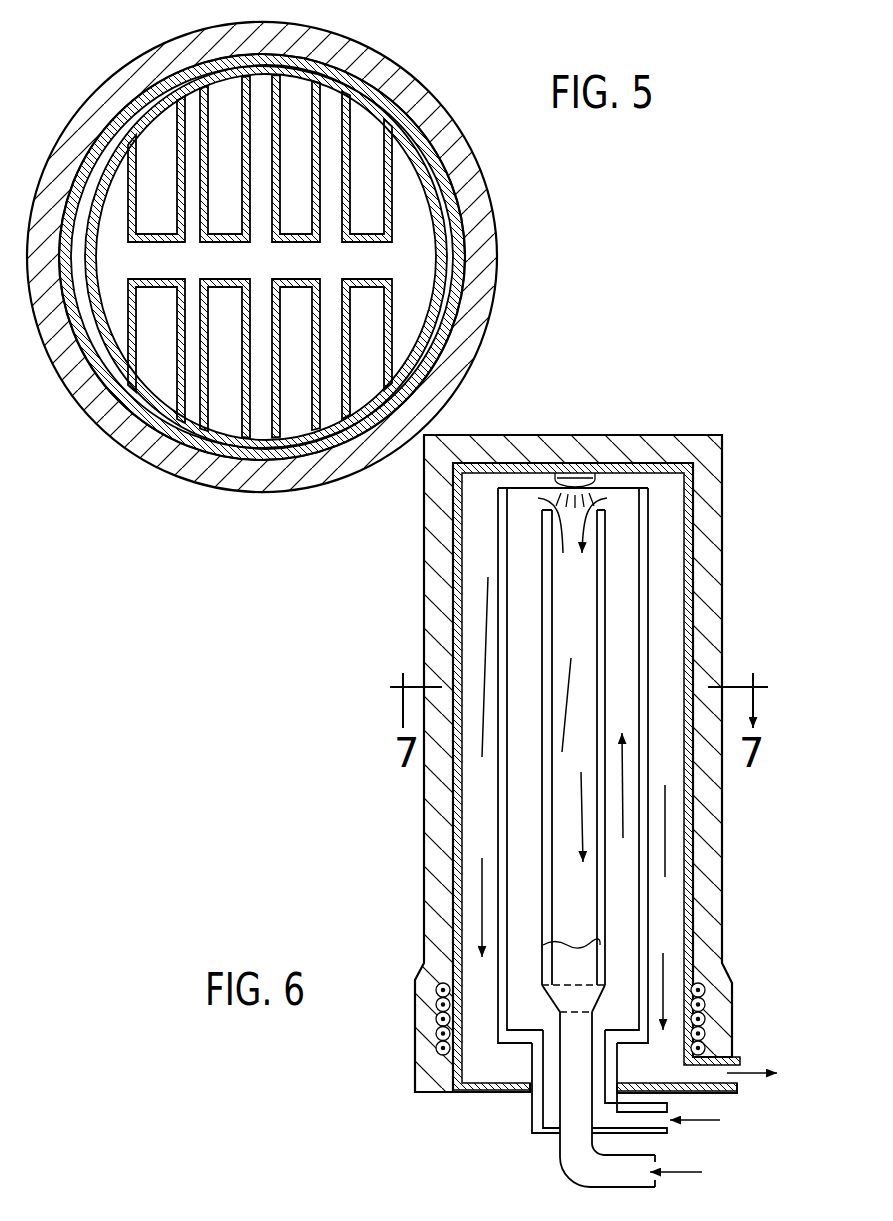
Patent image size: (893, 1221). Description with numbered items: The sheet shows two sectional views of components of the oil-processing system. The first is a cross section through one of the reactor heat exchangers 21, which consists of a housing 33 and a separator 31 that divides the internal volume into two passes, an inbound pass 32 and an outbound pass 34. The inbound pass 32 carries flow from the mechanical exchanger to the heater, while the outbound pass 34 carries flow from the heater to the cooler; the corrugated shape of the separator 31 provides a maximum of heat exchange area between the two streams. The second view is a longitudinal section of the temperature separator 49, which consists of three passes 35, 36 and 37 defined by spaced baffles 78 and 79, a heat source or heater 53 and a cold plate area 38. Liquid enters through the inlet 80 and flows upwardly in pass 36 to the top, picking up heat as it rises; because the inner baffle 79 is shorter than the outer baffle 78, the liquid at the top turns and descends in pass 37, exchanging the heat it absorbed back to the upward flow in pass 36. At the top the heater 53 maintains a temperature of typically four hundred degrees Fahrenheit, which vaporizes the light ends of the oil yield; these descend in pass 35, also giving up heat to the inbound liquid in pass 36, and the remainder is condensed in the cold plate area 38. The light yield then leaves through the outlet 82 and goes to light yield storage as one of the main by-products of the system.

In FIG. 5, the heat exchanger 21 is at (495, 187).
In FIG. 5, the separator 31 is at (288, 130).
In FIG. 5, the inbound pass 32 is at (367, 140).
In FIG. 5, the housing 33 is at (426, 120).
In FIG. 5, the outbound pass 34 is at (410, 269).
In FIG. 6, the pass 35 is at (677, 725).
In FIG. 6, the pass 36 is at (635, 919).
In FIG. 6, the pass 37 is at (580, 919).
In FIG. 6, the cold plate area 38 is at (716, 996).
In FIG. 6, the temperature separator 49 is at (423, 878).
In FIG. 6, the heater 53 is at (621, 452).
In FIG. 6, the outer baffle 78 is at (498, 523).
In FIG. 6, the baffle 79 is at (553, 618).
In FIG. 6, the inlet 80 is at (652, 1122).
In FIG. 6, the outlet 82 is at (739, 1058).